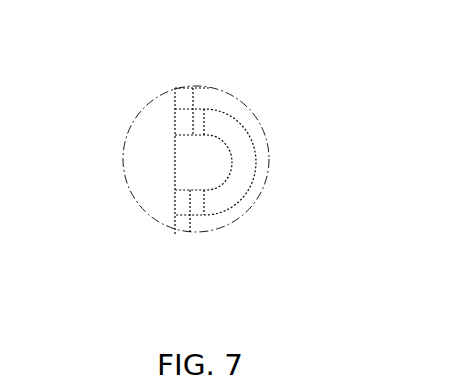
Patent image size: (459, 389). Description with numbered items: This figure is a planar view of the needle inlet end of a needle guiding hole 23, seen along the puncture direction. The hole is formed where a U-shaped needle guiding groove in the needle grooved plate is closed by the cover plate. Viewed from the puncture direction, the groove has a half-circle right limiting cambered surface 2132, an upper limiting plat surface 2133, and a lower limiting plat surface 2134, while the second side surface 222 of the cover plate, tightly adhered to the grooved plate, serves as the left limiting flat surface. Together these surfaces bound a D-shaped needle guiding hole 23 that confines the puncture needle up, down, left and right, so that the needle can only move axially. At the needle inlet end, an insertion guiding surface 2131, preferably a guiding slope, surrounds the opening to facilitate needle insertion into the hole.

The second side surface 222 is at (173, 152).
The needle guiding hole 23 is at (205, 165).
The insertion guiding surface 2131 is at (232, 135).
The right limiting cambered surface 2132 is at (232, 160).
The upper limiting plat surface 2133 is at (192, 94).
The lower limiting plat surface 2134 is at (189, 212).